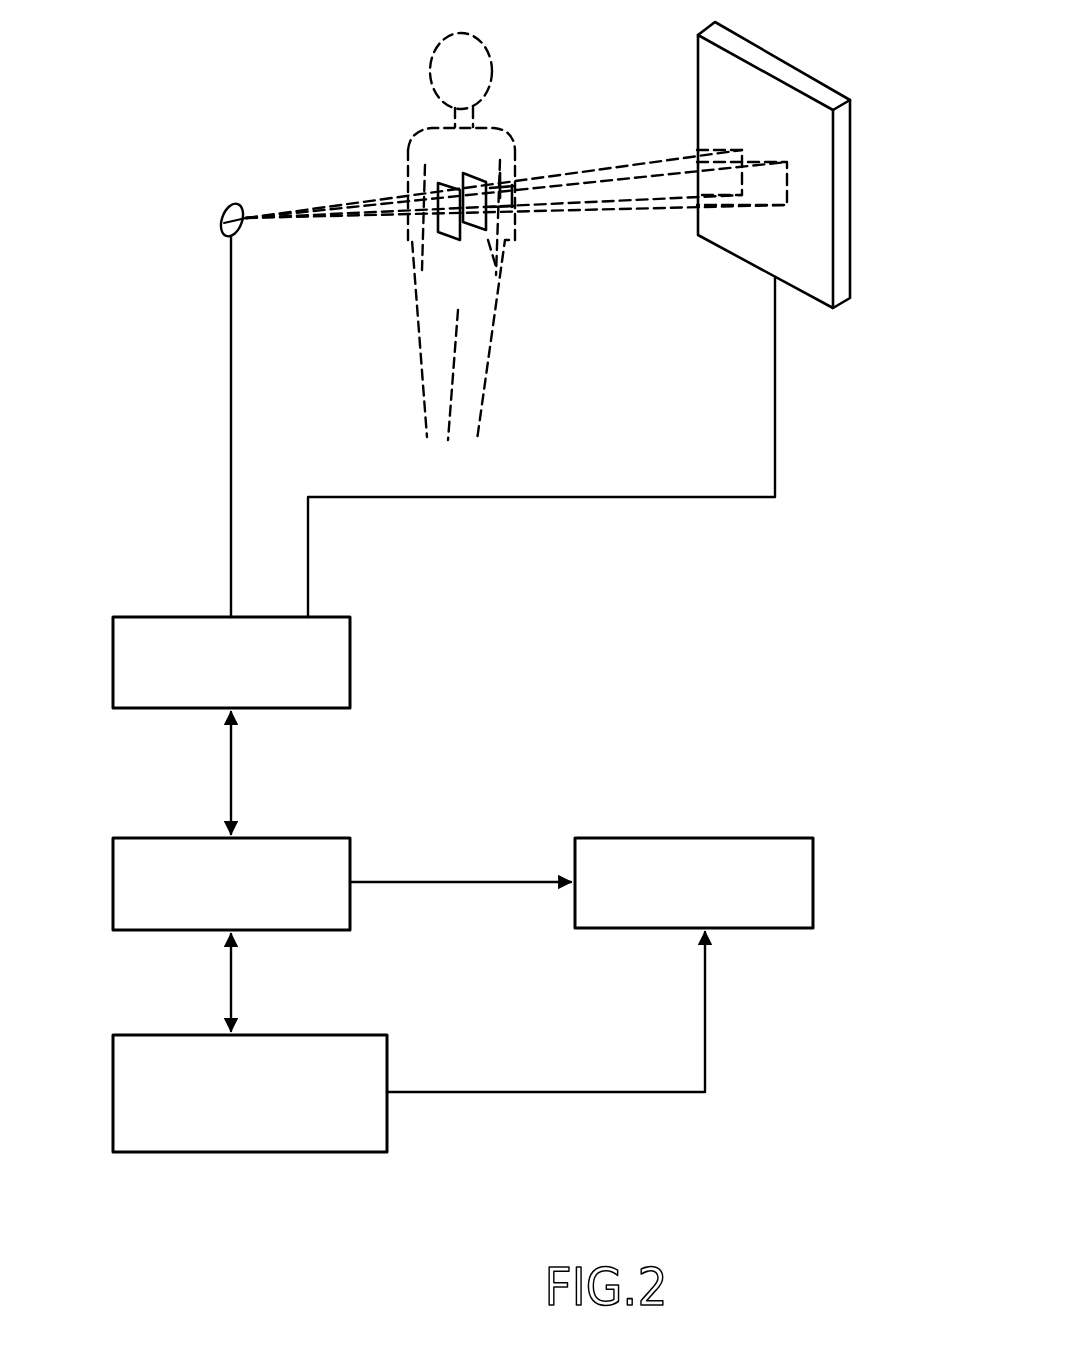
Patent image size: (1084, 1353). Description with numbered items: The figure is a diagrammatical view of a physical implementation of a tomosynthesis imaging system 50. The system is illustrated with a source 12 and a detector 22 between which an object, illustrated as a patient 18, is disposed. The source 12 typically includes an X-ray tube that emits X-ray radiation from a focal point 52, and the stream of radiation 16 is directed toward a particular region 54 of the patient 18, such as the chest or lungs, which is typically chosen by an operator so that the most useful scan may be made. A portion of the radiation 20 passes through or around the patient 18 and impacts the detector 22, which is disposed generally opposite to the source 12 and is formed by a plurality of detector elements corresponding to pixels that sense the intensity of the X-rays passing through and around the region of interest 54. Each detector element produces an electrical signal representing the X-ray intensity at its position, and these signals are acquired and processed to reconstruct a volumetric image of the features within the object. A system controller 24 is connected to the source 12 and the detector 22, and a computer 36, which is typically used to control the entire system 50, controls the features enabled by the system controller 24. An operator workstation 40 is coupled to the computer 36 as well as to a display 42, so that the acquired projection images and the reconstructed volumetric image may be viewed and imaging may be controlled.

The tomosynthesis imaging system 50 is at (200, 95).
The source 12 is at (220, 228).
The focal point 52 is at (222, 213).
The stream of radiation 16 is at (332, 205).
The patient 18 is at (412, 140).
The region of interest 54 is at (438, 236).
The portion of the radiation 20 is at (630, 165).
The detector 22 is at (850, 240).
The system controller 24 is at (352, 662).
The computer 36 is at (276, 931).
The operator workstation 40 is at (275, 1153).
The display 42 is at (813, 880).